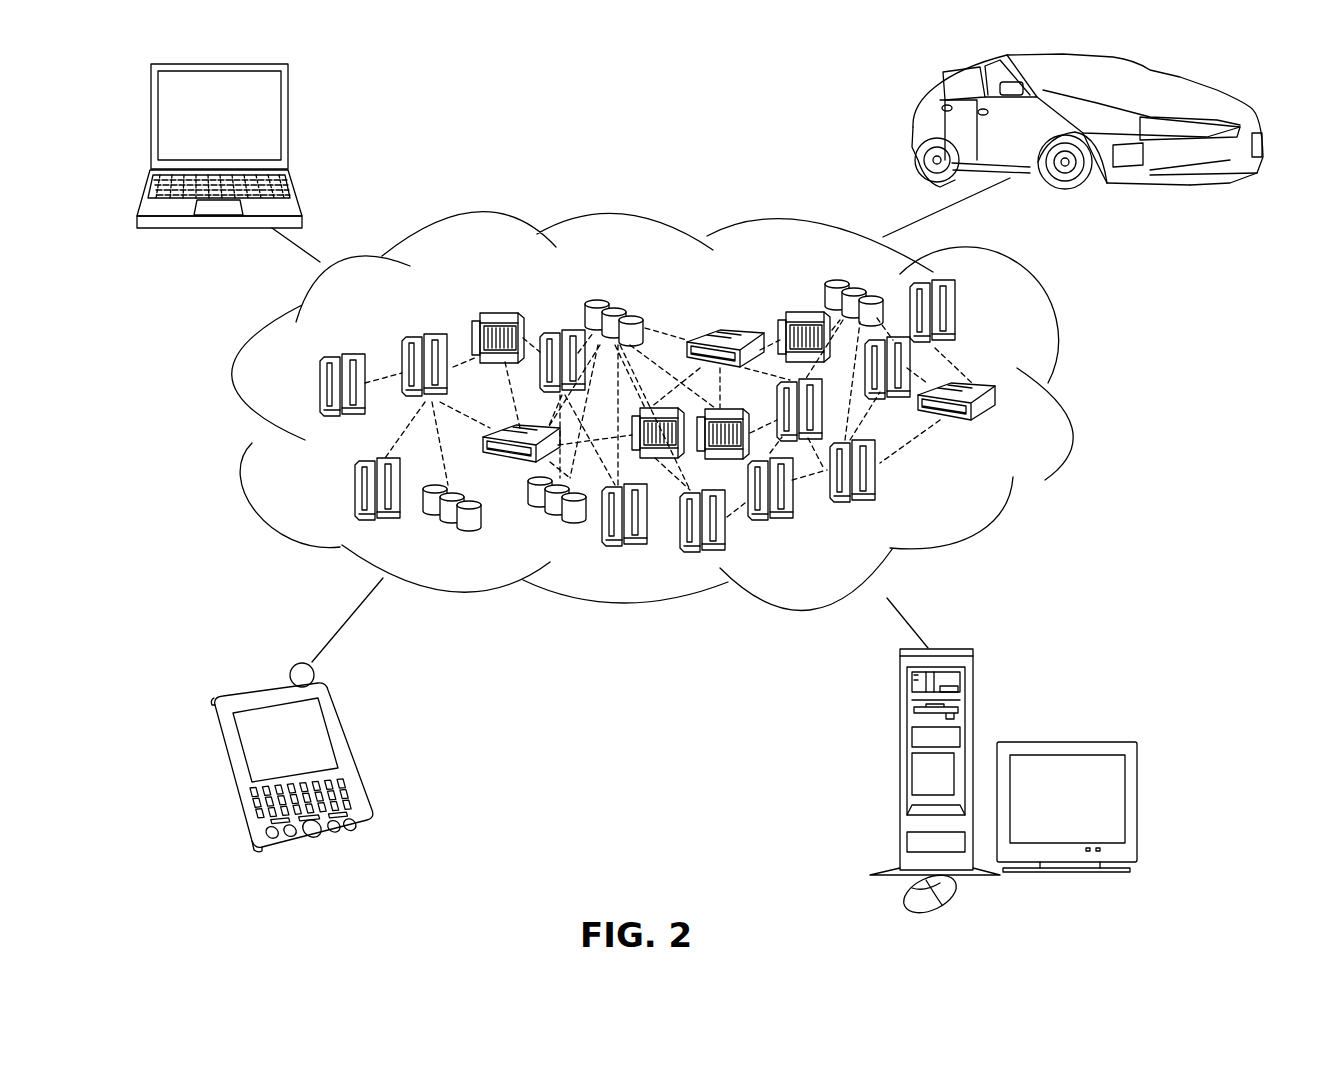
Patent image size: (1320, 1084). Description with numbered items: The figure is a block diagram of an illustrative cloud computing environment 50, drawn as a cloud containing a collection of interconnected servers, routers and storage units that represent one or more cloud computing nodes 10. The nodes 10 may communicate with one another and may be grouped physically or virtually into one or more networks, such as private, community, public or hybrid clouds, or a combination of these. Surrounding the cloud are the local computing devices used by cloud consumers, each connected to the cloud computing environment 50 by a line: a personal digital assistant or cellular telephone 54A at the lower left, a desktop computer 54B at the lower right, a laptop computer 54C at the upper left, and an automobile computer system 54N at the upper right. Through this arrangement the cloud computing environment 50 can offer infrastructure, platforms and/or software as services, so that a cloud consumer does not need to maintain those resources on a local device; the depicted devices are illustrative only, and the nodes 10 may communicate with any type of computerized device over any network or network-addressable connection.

The cloud computing node 10 is at (973, 497).
The cloud computing environment 50 is at (685, 411).
The personal digital assistant or cellular telephone 54A is at (342, 720).
The desktop computer 54B is at (898, 708).
The laptop computer 54C is at (288, 100).
The automobile computer system 54N is at (913, 118).